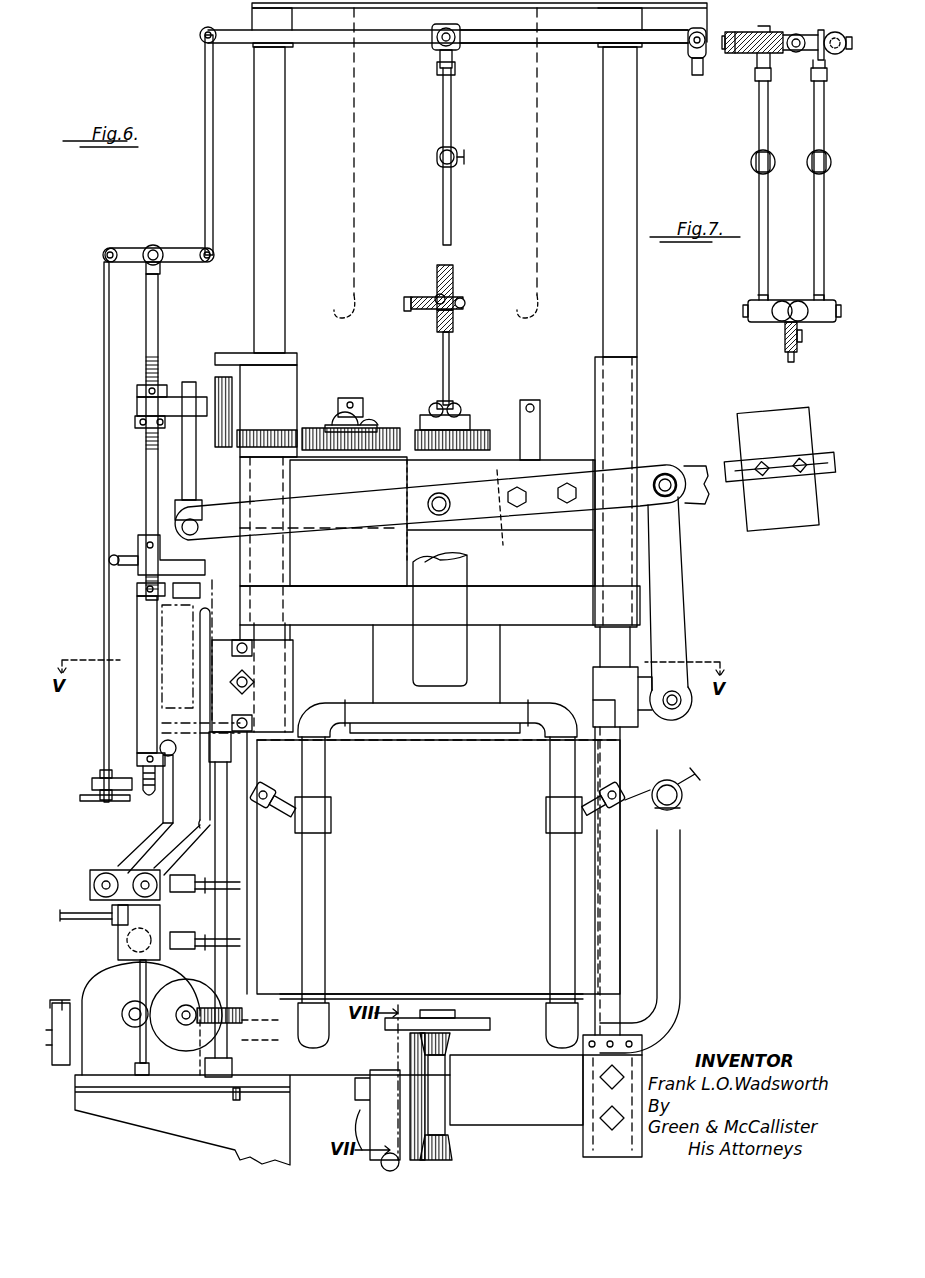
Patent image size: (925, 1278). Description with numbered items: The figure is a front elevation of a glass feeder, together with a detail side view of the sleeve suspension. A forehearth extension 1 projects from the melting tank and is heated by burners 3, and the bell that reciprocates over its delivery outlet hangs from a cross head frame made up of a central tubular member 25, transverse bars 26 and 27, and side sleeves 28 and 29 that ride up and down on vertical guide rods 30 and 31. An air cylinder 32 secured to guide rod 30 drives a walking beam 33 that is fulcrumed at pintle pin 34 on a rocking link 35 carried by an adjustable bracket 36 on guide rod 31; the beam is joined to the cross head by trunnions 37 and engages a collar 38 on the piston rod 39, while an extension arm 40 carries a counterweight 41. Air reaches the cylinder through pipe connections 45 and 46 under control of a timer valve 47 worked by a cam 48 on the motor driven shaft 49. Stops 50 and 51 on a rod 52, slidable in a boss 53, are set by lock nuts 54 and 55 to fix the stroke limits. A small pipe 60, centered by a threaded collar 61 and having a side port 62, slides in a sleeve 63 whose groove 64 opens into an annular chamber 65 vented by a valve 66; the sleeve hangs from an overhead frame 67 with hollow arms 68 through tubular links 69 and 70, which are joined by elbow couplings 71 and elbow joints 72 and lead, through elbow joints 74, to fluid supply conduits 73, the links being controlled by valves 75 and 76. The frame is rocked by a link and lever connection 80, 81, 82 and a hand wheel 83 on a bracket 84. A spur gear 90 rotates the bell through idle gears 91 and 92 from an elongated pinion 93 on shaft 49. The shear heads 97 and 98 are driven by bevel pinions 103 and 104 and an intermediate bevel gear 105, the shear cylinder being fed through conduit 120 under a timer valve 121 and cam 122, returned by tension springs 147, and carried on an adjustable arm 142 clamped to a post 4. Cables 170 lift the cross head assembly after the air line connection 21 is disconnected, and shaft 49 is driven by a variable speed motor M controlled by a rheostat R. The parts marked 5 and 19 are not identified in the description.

In FIG. 6, the forehearth extension 1 is at (610, 925).
In FIG. 6, the gas or oil burners 3 is at (266, 808).
In FIG. 6, the post 4 is at (590, 1158).
In FIG. 6, the base plate 5 is at (232, 1158).
In FIG. 6, the support 19 is at (499, 648).
In FIG. 6, the air line connection 21 is at (468, 578).
In FIG. 6, the central tubular member 25 is at (470, 541).
In FIG. 6, the transverse bars 26 is at (558, 603).
In FIG. 6, the transverse bars 27 is at (556, 462).
In FIG. 6, the cylindrical side sleeve 28 is at (291, 567).
In FIG. 6, the cylindrical side sleeve 29 is at (593, 548).
In FIG. 6, the vertical guide rod 30 is at (286, 157).
In FIG. 6, the vertical guide rod 31 is at (637, 148).
In FIG. 6, the air cylinder 32 is at (168, 695).
In FIG. 6, the walking beam 33 is at (362, 525).
In FIG. 6, the fulcrum pintle pin 34 is at (667, 472).
In FIG. 6, the rocking link member 35 is at (686, 575).
In FIG. 6, the adjustable bracket 36 is at (650, 722).
In FIG. 6, the removable trunnions 37 is at (428, 505).
In FIG. 6, the collar on piston rod 38 is at (175, 505).
In FIG. 6, the piston rod 39 is at (182, 468).
In FIG. 6, the extension arm 40 is at (699, 475).
In FIG. 6, the adjustable counterweight 41 is at (788, 524).
In FIG. 6, the pipe connection 45 is at (212, 720).
In FIG. 6, the pipe connection 46 is at (166, 810).
In FIG. 6, the timer valve mechanism 47 is at (90, 884).
In FIG. 6, the cam 48 is at (205, 880).
In FIG. 6, the motor driven shaft 49 is at (216, 915).
In FIG. 6, the lower adjustable stop 50 is at (138, 545).
In FIG. 6, the upper adjustable stop 51 is at (137, 407).
In FIG. 6, the stop carrying rod 52 is at (147, 445).
In FIG. 6, the boss 53 is at (137, 622).
In FIG. 6, the lock nuts 54 is at (137, 392).
In FIG. 6, the lock nuts 55 is at (137, 590).
In FIG. 6, the small pipe 60 is at (449, 370).
In FIG. 7, the small pipe 60 is at (788, 355).
In FIG. 6, the threaded collar 61 is at (460, 424).
In FIG. 6, the side port 62 is at (437, 335).
In FIG. 6, the open ended sleeve 63 is at (454, 280).
In FIG. 7, the open ended sleeve 63 is at (784, 340).
In FIG. 6, the circumferential groove 64 is at (464, 305).
In FIG. 6, the annular chamber 65 is at (437, 297).
In FIG. 6, the manually operable valve 66 is at (405, 305).
In FIG. 7, the manually operable valve 66 is at (800, 336).
In FIG. 6, the overhead frame 67 is at (385, 44).
In FIG. 7, the overhead frame 67 is at (795, 33).
In FIG. 6, the hollow pipe arms 68 is at (556, 44).
In FIG. 7, the hollow pipe arms 68 is at (752, 34).
In FIG. 6, the tubular link 69 is at (452, 212).
In FIG. 7, the tubular link 69 is at (768, 230).
In FIG. 7, the tubular link 70 is at (814, 195).
In FIG. 7, the elbow couplings 71 is at (746, 318).
In FIG. 6, the elbow joints 72 is at (456, 45).
In FIG. 7, the elbow joints 72 is at (757, 70).
In FIG. 6, the fluid supply conduits 73 is at (693, 62).
In FIG. 6, the elbow joints 74 is at (704, 56).
In FIG. 6, the valve 75 is at (462, 158).
In FIG. 7, the valve 75 is at (752, 162).
In FIG. 7, the valve 76 is at (808, 158).
In FIG. 6, the link 80 is at (205, 178).
In FIG. 6, the lever 81 is at (178, 251).
In FIG. 6, the link 82 is at (104, 312).
In FIG. 6, the hand wheel 83 is at (88, 802).
In FIG. 6, the bracket 84 is at (92, 785).
In FIG. 6, the spur gear 90 is at (485, 448).
In FIG. 6, the idle gear 91 is at (318, 430).
In FIG. 6, the idle gear 92 is at (270, 454).
In FIG. 6, the elongated spur pinion 93 is at (218, 380).
In FIG. 6, the shear arm or head 97 is at (472, 1019).
In FIG. 6, the shear arm or head 98 is at (490, 1028).
In FIG. 6, the bevel pinion 103 is at (452, 1158).
In FIG. 6, the bevel pinion 104 is at (450, 1046).
In FIG. 6, the intermediate bevel gear 105 is at (392, 1072).
In FIG. 6, the conduit 120 is at (141, 1050).
In FIG. 6, the timer valve mechanism 121 is at (118, 945).
In FIG. 6, the cam 122 is at (225, 940).
In FIG. 6, the angularly adjustable arm 142 is at (516, 1090).
In FIG. 6, the tension springs 147 is at (380, 1162).
In FIG. 6, the cables 170 is at (356, 228).
In FIG. 6, the variable speed motor M is at (105, 980).
In FIG. 6, the rheostat R is at (68, 1068).